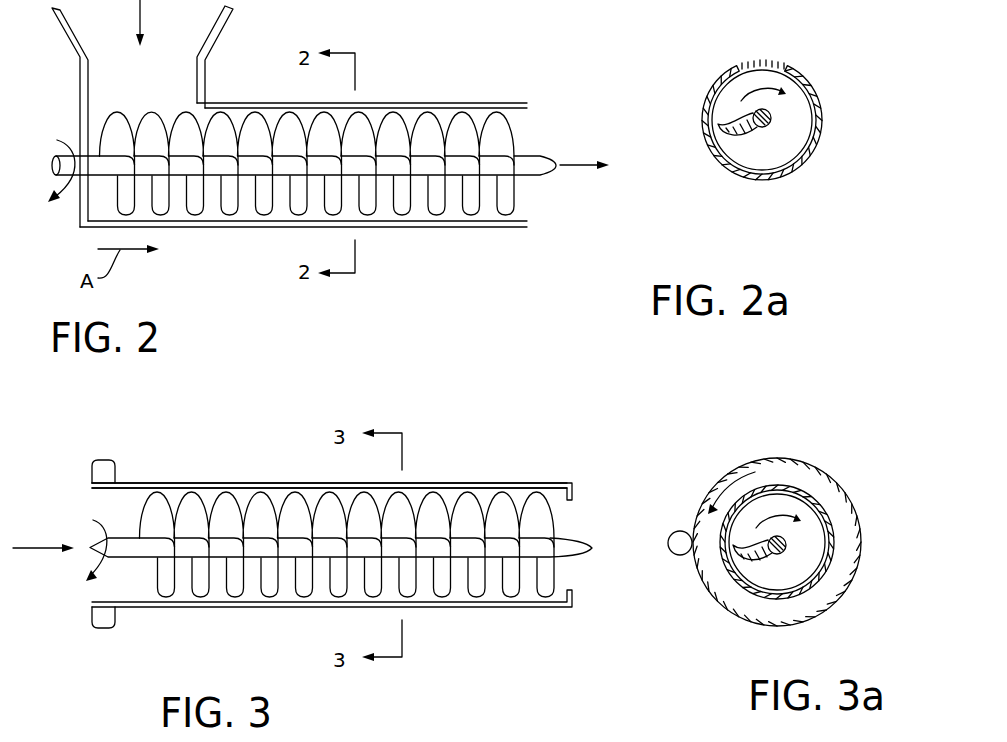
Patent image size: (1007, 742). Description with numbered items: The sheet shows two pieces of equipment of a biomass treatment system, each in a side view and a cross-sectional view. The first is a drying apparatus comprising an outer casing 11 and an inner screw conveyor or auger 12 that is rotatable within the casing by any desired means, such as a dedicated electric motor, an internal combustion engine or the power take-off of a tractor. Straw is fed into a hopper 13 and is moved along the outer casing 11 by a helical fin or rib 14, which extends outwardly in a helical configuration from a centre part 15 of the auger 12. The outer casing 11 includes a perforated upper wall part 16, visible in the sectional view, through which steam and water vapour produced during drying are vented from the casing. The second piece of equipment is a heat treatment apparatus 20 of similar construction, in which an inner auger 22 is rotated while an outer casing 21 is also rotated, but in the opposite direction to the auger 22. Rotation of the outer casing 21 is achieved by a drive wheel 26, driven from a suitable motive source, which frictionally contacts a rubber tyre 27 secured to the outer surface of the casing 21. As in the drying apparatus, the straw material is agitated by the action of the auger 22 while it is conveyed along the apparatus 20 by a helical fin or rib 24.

In FIG. 2A, the outer casing 11 is at (773, 178).
In FIG. 2, the inner screw conveyor or auger 12 is at (416, 200).
In FIG. 2, the hopper 13 is at (212, 42).
In FIG. 2, the helical fin or rib 14 is at (192, 206).
In FIG. 2A, the helical fin or rib 14 is at (793, 135).
In FIG. 2, the centre part 15 is at (528, 172).
In FIG. 2A, the centre part 15 is at (775, 128).
In FIG. 2A, the perforated upper wall part 16 is at (757, 62).
In FIG. 3, the heat treatment apparatus 20 is at (470, 483).
In FIG. 3A, the heat treatment apparatus 20 is at (777, 542).
In FIG. 3, the outer casing 21 is at (224, 488).
In FIG. 3, the inner auger 22 is at (462, 566).
In FIG. 3, the helical fin or rib 24 is at (400, 518).
In FIG. 3A, the helical fin or rib 24 is at (767, 537).
In FIG. 3A, the drive wheel 26 is at (680, 531).
In FIG. 3, the rubber tyre 27 is at (113, 473).
In FIG. 3A, the rubber tyre 27 is at (715, 598).